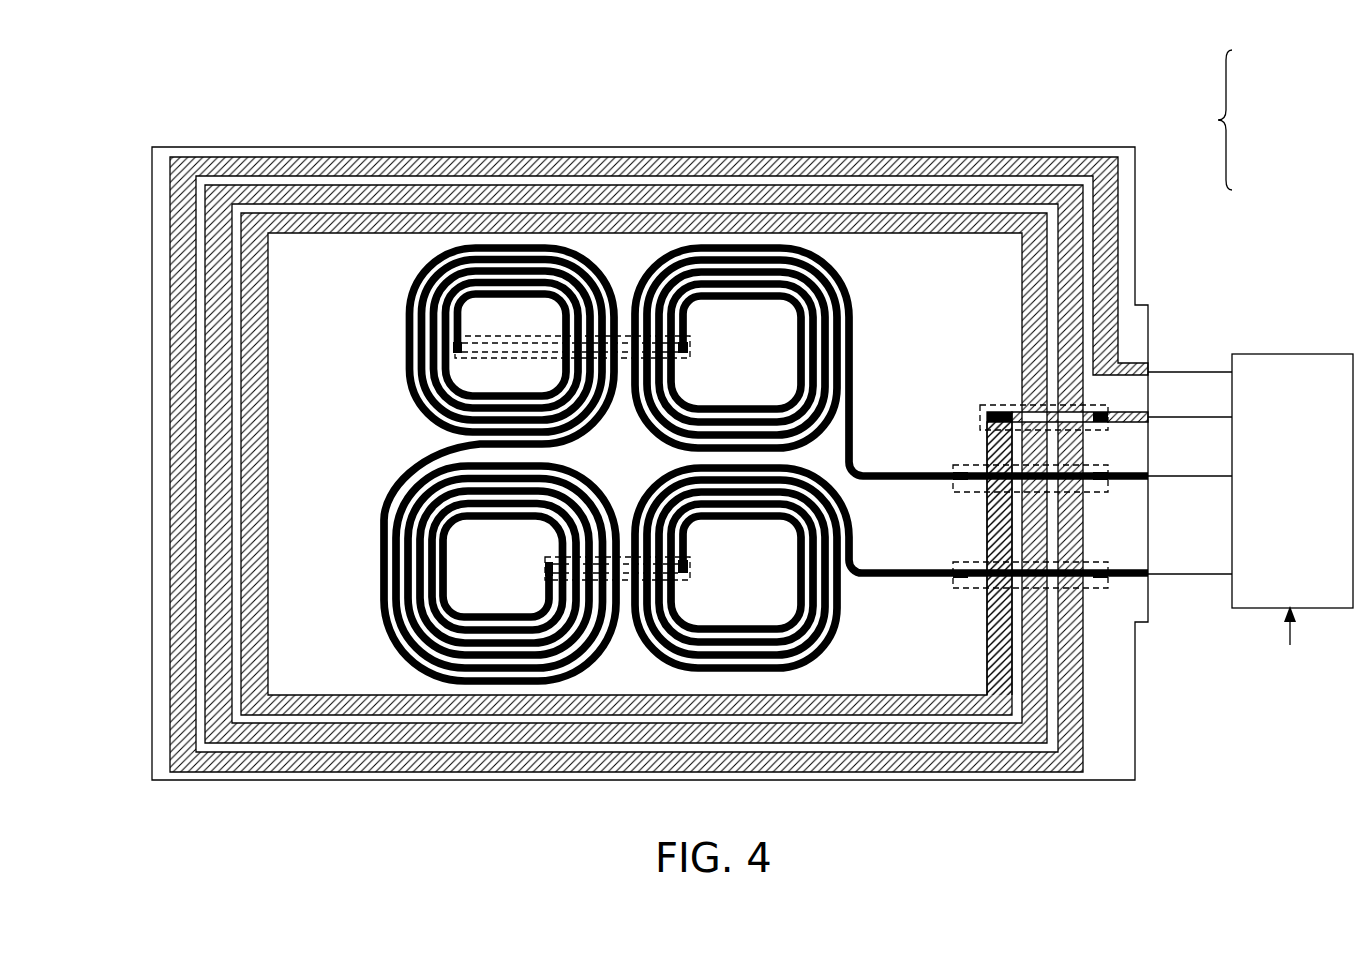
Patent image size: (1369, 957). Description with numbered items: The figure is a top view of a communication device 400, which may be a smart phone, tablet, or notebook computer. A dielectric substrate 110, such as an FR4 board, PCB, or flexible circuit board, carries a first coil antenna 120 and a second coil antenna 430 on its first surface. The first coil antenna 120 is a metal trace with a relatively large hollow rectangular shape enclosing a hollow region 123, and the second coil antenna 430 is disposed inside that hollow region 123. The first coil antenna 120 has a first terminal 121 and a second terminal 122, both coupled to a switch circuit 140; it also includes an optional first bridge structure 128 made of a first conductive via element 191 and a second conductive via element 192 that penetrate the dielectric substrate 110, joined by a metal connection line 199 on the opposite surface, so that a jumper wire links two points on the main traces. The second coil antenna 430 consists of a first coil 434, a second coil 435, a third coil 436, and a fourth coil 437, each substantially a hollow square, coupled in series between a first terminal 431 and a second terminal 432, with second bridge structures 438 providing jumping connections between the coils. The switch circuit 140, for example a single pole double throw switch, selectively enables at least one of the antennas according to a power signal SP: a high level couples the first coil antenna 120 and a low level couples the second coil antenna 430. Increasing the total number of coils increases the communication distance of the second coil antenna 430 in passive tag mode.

The communication device 400 is at (152, 104).
The dielectric substrate 110 is at (152, 214).
The first coil antenna 120 is at (636, 157).
The first terminal 121 is at (1152, 372).
The second terminal 122 is at (1152, 417).
The hollow region 123 is at (913, 270).
The first bridge structure 128 is at (992, 404).
The switch circuit 140 is at (1290, 353).
The first conductive via element 191 is at (1000, 410).
The second conductive via element 192 is at (1100, 405).
The metal connection line 199 is at (1052, 408).
The second coil antenna 430 is at (1225, 120).
The first terminal 431 is at (1152, 476).
The second terminal 432 is at (1152, 574).
The first coil 434 is at (745, 245).
The second coil 435 is at (510, 245).
The third coil 436 is at (380, 576).
The fourth coil 437 is at (828, 647).
The second bridge structure 438 is at (692, 347).
The power signal SP is at (1291, 646).